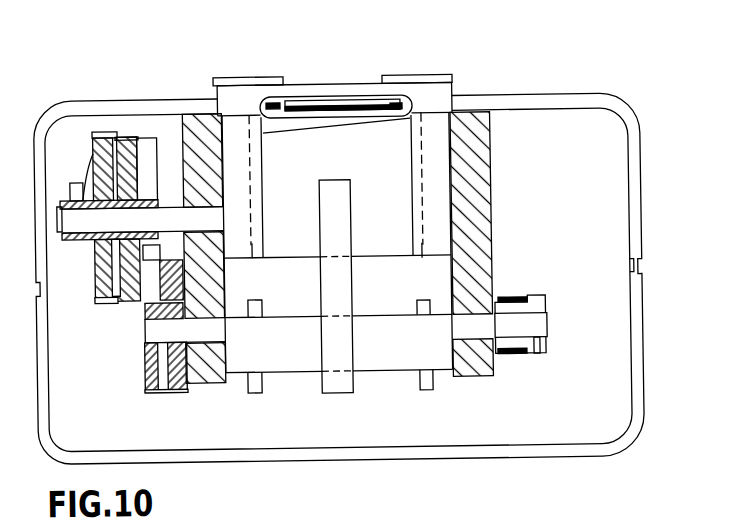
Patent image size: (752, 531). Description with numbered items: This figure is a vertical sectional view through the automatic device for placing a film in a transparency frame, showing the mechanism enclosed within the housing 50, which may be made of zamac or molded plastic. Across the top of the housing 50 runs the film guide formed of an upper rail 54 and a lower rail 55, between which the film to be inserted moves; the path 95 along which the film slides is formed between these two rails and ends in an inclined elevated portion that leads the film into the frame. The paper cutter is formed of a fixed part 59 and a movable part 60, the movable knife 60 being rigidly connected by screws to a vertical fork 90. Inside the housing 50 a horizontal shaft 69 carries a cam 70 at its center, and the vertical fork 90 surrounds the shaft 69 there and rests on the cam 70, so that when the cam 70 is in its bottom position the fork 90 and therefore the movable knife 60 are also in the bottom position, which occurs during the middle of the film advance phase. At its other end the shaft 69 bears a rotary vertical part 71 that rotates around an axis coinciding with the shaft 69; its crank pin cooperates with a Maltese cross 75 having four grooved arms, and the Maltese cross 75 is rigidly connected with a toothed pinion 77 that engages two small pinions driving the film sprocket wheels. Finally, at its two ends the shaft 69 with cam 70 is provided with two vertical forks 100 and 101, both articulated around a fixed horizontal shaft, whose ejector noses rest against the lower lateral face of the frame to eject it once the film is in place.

The housing 50 is at (631, 416).
The upper rail 54 is at (280, 104).
The lower rail 55 is at (300, 104).
The fixed part 59 is at (295, 89).
The movable part 60 is at (394, 141).
The shaft 69 is at (178, 331).
The cam 70 is at (292, 372).
The vertical part 71 is at (151, 390).
The Maltese cross 75 is at (127, 134).
The toothed pinion 77 is at (108, 302).
The vertical fork 90 is at (338, 393).
The path 95 is at (396, 101).
The vertical fork 100 is at (425, 391).
The vertical fork 101 is at (253, 394).